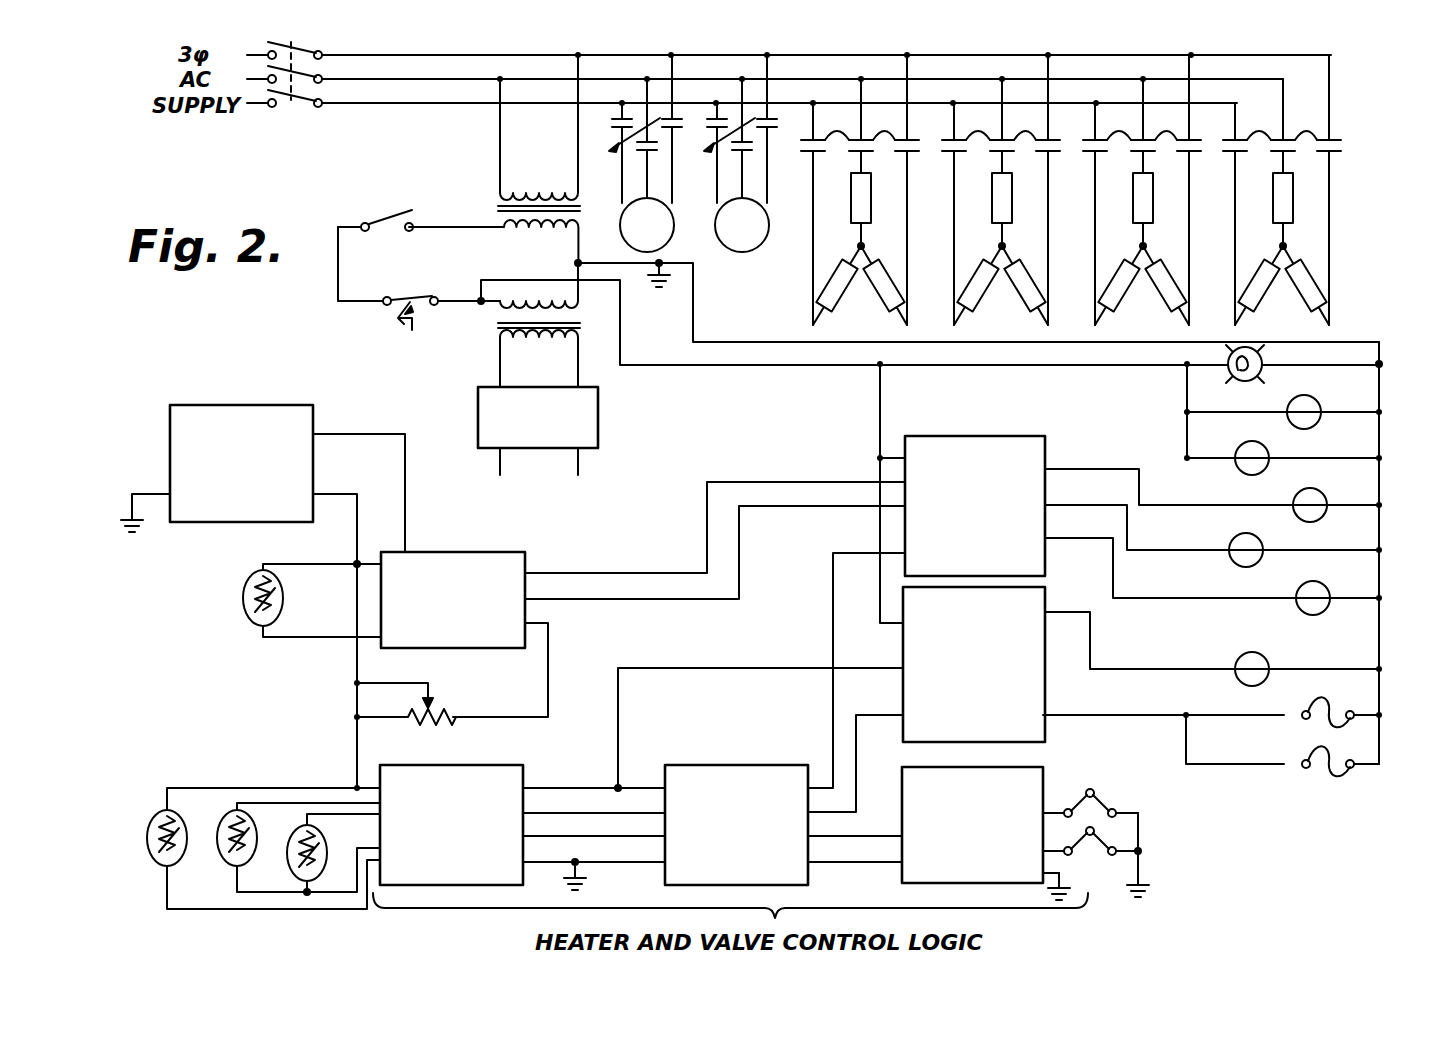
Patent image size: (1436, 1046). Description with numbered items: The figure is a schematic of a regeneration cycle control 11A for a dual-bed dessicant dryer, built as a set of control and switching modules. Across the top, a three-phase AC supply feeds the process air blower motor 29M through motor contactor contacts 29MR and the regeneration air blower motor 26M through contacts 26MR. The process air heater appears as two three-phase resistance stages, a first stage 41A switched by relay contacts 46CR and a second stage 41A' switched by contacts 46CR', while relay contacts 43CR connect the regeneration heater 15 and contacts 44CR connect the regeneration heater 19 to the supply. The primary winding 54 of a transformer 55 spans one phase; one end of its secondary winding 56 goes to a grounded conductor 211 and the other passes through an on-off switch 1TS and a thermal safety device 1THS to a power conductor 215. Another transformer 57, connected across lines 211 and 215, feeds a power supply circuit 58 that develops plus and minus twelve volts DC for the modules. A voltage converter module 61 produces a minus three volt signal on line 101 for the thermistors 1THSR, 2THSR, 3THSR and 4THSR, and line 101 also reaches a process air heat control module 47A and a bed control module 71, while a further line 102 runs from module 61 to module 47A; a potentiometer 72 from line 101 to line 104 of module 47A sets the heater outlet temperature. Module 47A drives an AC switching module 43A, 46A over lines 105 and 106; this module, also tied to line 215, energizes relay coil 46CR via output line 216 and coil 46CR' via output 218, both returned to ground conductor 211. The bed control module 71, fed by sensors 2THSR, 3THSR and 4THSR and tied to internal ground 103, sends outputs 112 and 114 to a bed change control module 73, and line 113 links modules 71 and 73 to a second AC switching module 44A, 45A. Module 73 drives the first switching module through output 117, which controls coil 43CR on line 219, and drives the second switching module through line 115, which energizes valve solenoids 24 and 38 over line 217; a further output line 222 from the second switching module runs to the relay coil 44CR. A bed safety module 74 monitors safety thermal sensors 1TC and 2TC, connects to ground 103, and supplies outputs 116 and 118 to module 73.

The primary winding 54 is at (562, 192).
The transformer 55 is at (496, 217).
The secondary winding 56 is at (554, 230).
The transformer 57 is at (492, 336).
The power supply circuit 58 is at (476, 408).
The voltage converter module 61 is at (272, 400).
The bed control module 71 is at (476, 763).
The potentiometer 72 is at (424, 723).
The bed change control module 73 is at (794, 764).
The bed safety module 74 is at (1044, 772).
The process air heat control module 47A is at (460, 649).
The regeneration cycle control 11A is at (746, 724).
The regeneration heater 15 is at (1126, 209).
The regeneration heater 19 is at (1268, 209).
The valve solenoid 24 is at (1328, 704).
The valve solenoid 38 is at (1322, 784).
The first stage heater 41A is at (860, 190).
The second stage heater 41A' is at (1002, 190).
The process air blower motor 29M is at (667, 239).
The regeneration air blower motor 26M is at (746, 250).
The motor contactor contacts 29MR is at (1314, 388).
The motor contactor contacts 26MR is at (1275, 444).
The relay contacts and coil 46CR is at (1090, 315).
The relay contacts and coil 46CR' is at (1128, 338).
The control relay 43CR is at (1294, 585).
The relay contacts 44CR is at (1328, 118).
The AC switching module 43A is at (1007, 484).
The AC switching module 46A is at (991, 434).
The AC switching module 44A is at (1030, 666).
The AC switching module 45A is at (1044, 735).
The line 101 is at (357, 536).
The signal line 102 is at (382, 440).
The internal ground 103 is at (140, 492).
The line 104 is at (548, 686).
The line 105 is at (658, 568).
The line 106 is at (614, 602).
The output line 112 is at (580, 810).
The line 113 is at (580, 784).
The output line 114 is at (580, 834).
The line 115 is at (856, 750).
The output connection 116 is at (848, 870).
The output line 117 is at (834, 611).
The output connection 118 is at (852, 834).
The grounded conductor 211 is at (750, 322).
The power conductor 215 is at (716, 366).
The output line 216 is at (1120, 468).
The line 217 is at (1148, 710).
The output line 218 is at (1105, 504).
The line 219 is at (1110, 566).
The control line 222 is at (1172, 664).
The on-off switch 1TS is at (419, 208).
The thermal safety device 1THS is at (419, 278).
The thermistor 1THSR is at (242, 610).
The thermistor 2THSR is at (164, 812).
The thermistor 3THSR is at (238, 872).
The thermistor 4THSR is at (304, 882).
The safety thermal sensor 1TC is at (1104, 804).
The safety thermal sensor 2TC is at (1077, 856).